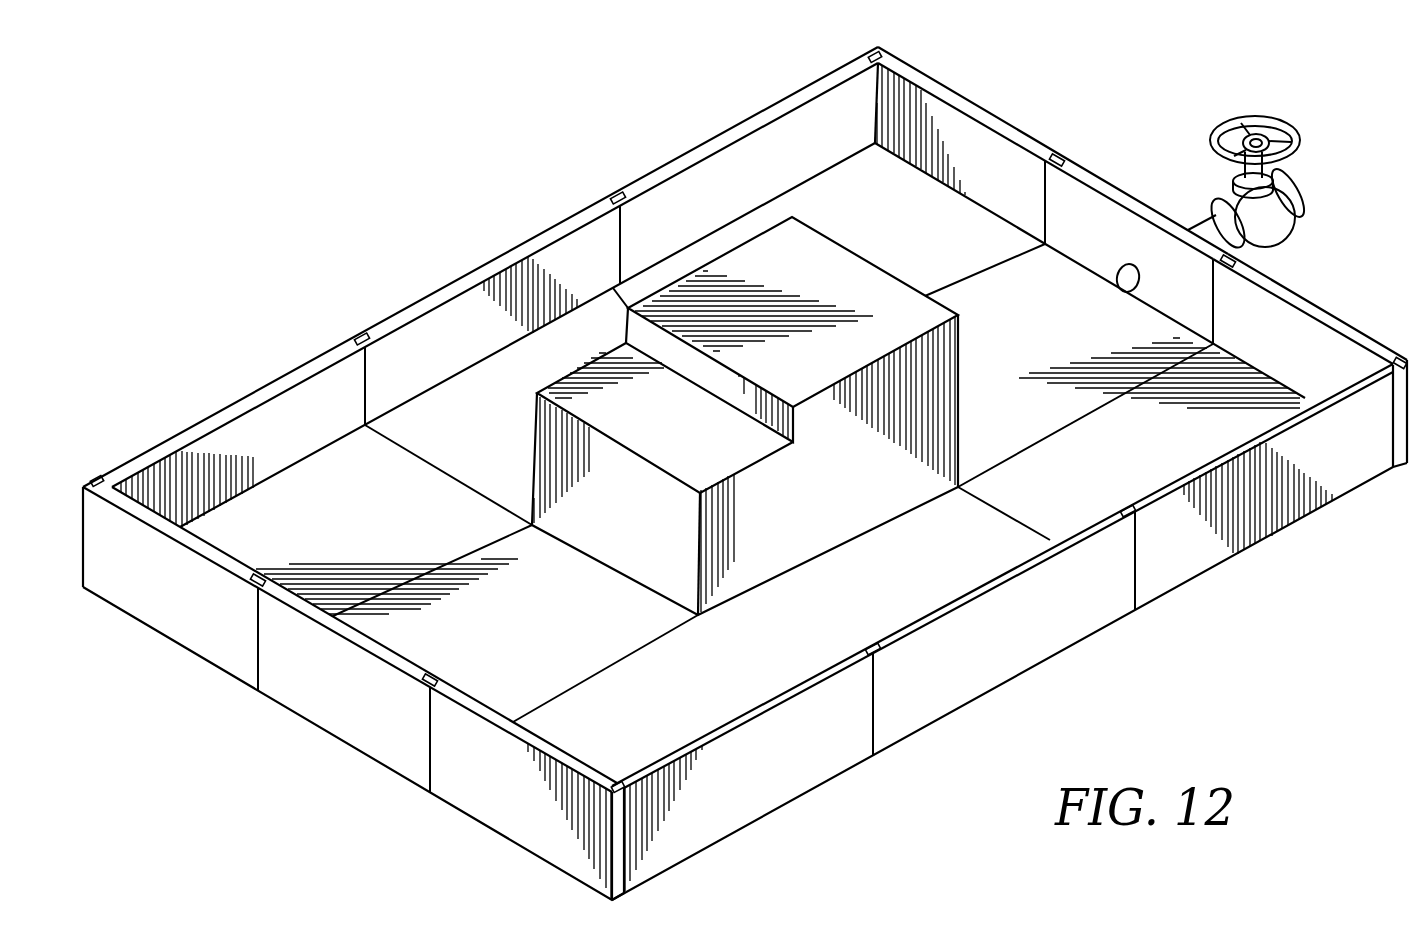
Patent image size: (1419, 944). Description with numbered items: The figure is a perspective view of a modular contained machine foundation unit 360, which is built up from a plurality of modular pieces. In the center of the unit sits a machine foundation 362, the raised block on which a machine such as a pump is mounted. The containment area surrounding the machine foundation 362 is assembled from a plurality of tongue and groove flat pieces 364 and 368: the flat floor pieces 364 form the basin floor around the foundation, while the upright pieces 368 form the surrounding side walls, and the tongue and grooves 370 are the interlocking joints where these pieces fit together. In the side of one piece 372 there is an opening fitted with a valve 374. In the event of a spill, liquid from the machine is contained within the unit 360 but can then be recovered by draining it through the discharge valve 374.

The modular contained machine foundation unit 360 is at (374, 210).
The machine foundation 362 is at (803, 246).
The tongue and groove flat pieces 364 is at (928, 247).
The tongue and groove flat pieces 368 is at (967, 98).
The tongue and grooves 370 is at (611, 194).
The side piece with opening 372 is at (1127, 190).
The discharge valve 374 is at (1276, 242).